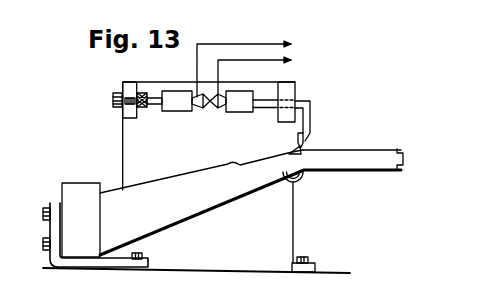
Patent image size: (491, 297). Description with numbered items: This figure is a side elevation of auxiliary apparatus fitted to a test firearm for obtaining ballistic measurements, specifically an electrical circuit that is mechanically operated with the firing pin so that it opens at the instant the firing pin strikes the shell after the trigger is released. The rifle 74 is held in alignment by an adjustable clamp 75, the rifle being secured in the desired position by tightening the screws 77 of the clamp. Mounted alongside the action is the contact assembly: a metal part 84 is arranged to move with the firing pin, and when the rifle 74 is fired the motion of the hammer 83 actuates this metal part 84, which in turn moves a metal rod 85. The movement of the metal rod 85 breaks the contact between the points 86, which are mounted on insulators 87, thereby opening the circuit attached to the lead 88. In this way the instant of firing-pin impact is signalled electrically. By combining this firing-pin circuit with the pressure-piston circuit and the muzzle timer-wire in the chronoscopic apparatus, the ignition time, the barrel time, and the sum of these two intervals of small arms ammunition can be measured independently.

The rifle 74 is at (362, 160).
The clamp 75 is at (82, 184).
The screws 77 is at (47, 247).
The hammer 83 is at (288, 150).
The metal part 84 is at (305, 142).
The metal rod 85 is at (310, 110).
The points 86 is at (217, 108).
The insulators 87 is at (183, 106).
The lead 88 is at (292, 47).